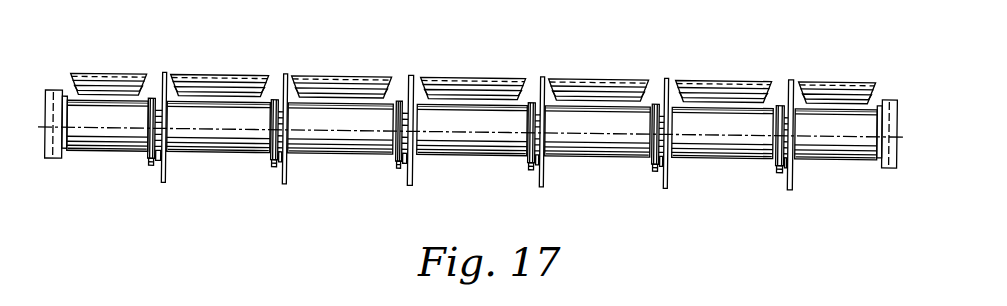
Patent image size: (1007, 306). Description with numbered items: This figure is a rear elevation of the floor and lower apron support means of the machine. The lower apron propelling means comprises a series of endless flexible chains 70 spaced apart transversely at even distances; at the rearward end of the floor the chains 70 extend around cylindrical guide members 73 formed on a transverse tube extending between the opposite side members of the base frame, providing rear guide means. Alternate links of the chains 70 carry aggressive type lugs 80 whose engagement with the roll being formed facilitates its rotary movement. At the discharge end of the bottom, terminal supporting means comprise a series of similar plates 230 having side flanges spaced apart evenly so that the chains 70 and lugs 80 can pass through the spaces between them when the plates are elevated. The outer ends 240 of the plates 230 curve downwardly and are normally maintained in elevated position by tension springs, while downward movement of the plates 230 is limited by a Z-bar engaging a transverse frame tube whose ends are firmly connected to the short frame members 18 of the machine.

The short frame member 18 is at (51, 92).
The plates 230 is at (207, 106).
The outer ends of plates 240 is at (114, 77).
The endless flexible chains 70 is at (151, 83).
The cylindrical guide members 73 is at (152, 160).
The lugs 80 is at (167, 174).